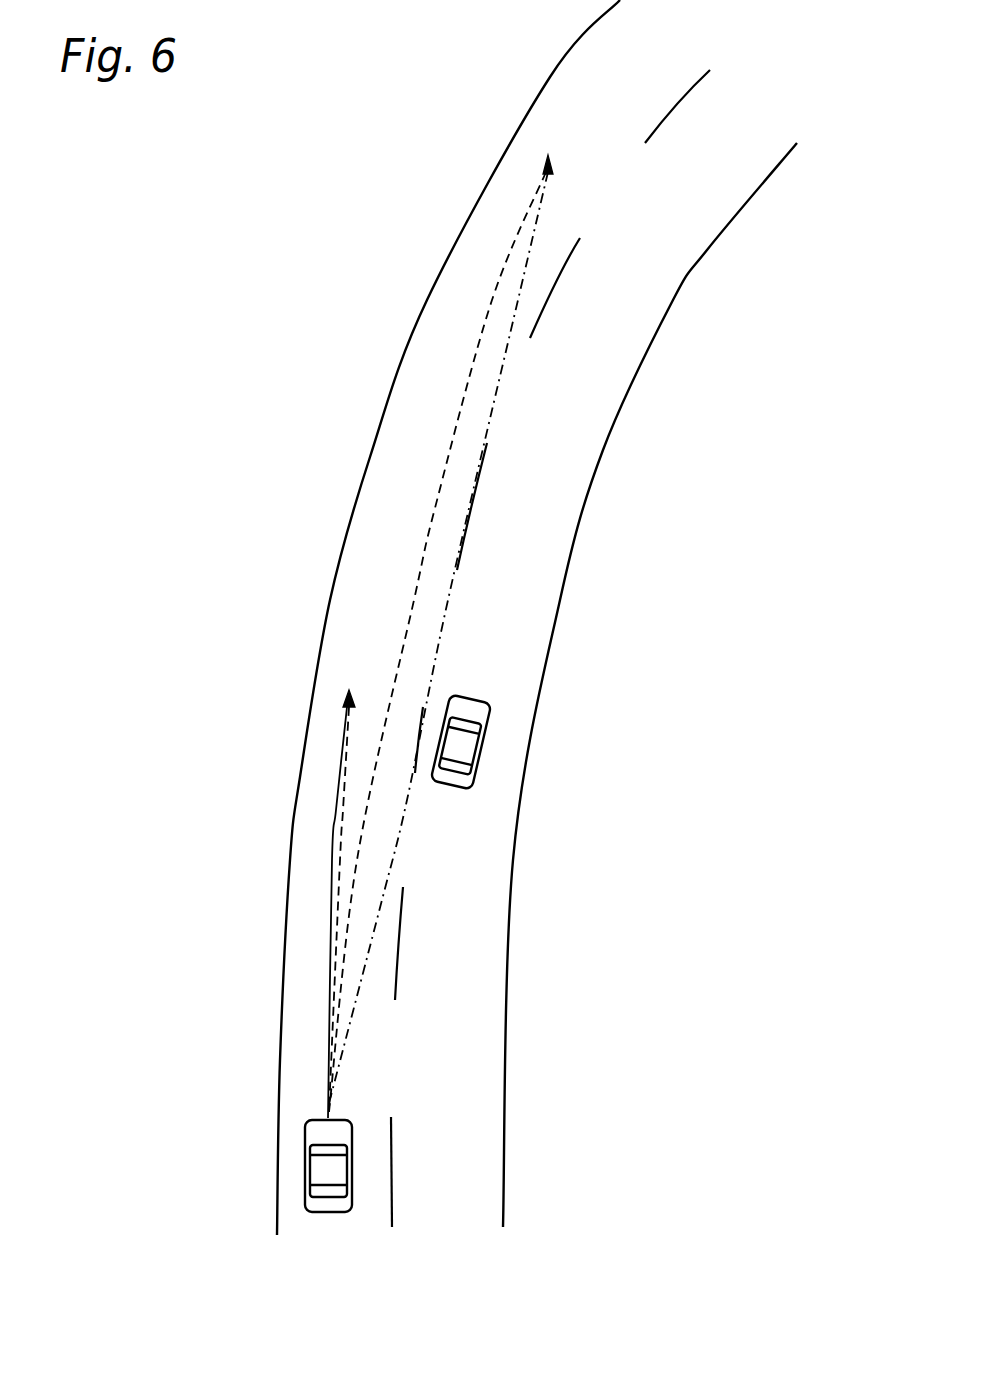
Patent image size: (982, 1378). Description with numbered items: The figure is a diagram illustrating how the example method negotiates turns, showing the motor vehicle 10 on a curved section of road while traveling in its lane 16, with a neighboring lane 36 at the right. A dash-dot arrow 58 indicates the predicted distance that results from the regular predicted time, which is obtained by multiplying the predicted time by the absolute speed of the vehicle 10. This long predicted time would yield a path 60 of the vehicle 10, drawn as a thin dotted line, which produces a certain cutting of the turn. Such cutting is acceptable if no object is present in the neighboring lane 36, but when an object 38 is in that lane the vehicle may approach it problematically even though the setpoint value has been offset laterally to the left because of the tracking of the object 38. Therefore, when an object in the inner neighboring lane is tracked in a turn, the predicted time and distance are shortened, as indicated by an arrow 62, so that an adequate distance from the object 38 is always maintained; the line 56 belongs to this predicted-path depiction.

The motor vehicle 10 is at (313, 1172).
The lane 16 is at (570, 80).
The neighboring lane 36 is at (673, 245).
The object 38 is at (488, 720).
The predicted path of other vehicle 56 is at (493, 405).
The dash-dot arrow 58 is at (435, 510).
The path 60 is at (347, 838).
The arrow 62 is at (330, 907).